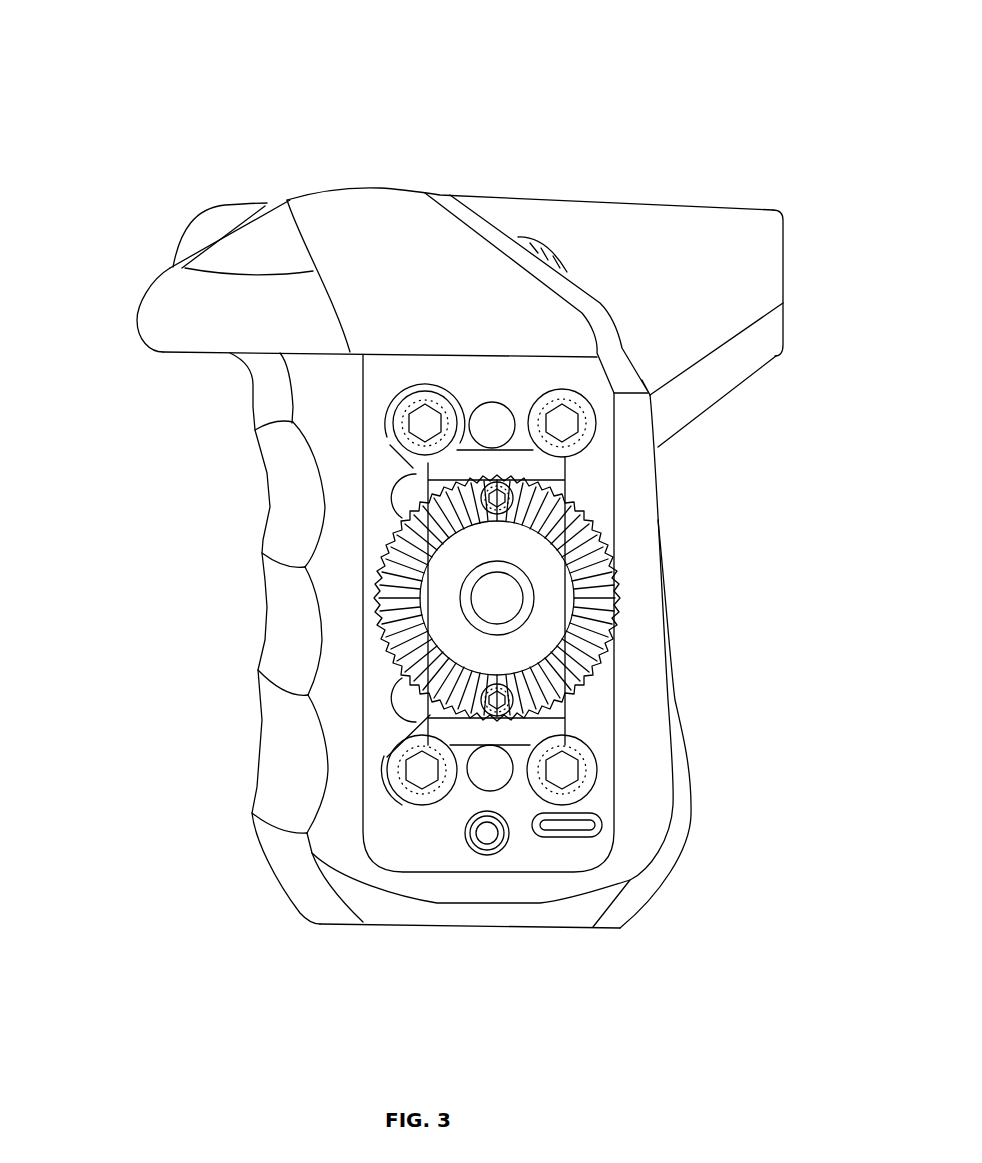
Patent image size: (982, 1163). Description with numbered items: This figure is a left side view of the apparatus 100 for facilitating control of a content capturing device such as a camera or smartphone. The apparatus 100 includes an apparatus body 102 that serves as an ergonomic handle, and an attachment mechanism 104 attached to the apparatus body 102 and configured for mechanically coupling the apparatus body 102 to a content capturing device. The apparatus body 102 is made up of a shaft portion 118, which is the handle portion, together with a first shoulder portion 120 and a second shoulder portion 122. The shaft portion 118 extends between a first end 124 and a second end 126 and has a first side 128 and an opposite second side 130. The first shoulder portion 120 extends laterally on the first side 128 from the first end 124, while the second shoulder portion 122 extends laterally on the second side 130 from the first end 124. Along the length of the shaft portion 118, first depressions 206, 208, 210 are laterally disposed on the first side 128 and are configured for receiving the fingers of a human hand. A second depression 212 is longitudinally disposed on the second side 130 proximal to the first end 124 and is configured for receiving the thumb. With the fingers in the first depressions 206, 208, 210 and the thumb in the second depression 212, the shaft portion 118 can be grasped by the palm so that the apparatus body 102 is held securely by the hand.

The apparatus 100 is at (423, 48).
The apparatus body 102 is at (695, 606).
The attachment mechanism 104 is at (611, 556).
The shaft portion 118 is at (633, 742).
The first shoulder portion 120 is at (172, 303).
The second shoulder portion 122 is at (705, 240).
The first end 124 is at (383, 188).
The second end 126 is at (503, 928).
The first side 128 is at (263, 685).
The second side 130 is at (667, 672).
The first depression 206 is at (288, 492).
The first depression 208 is at (288, 618).
The first depression 210 is at (280, 783).
The second depression 212 is at (497, 220).